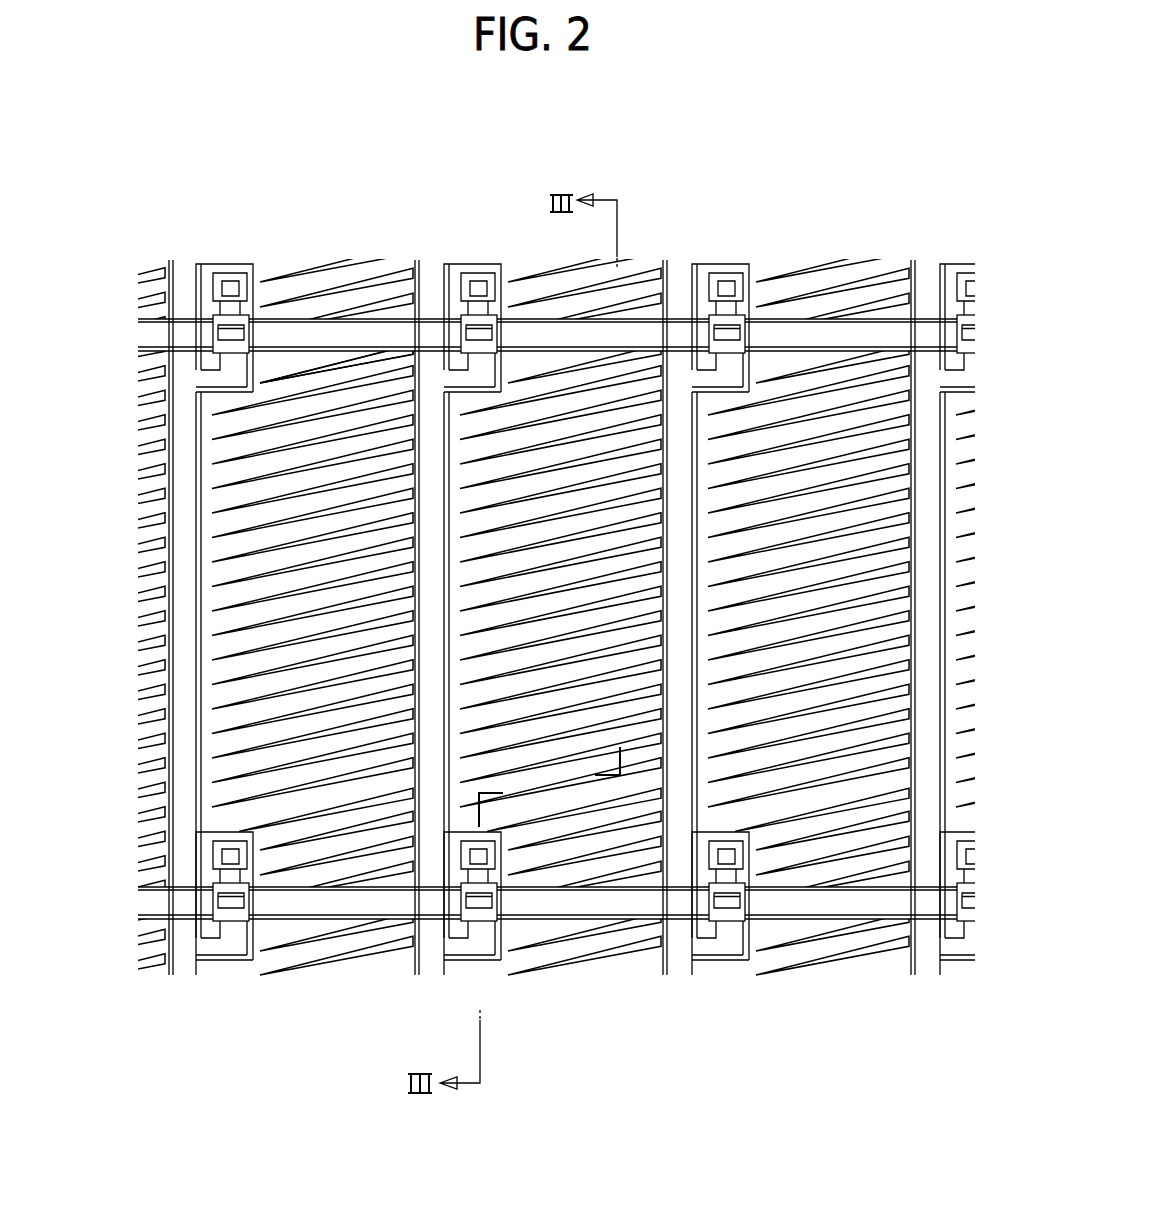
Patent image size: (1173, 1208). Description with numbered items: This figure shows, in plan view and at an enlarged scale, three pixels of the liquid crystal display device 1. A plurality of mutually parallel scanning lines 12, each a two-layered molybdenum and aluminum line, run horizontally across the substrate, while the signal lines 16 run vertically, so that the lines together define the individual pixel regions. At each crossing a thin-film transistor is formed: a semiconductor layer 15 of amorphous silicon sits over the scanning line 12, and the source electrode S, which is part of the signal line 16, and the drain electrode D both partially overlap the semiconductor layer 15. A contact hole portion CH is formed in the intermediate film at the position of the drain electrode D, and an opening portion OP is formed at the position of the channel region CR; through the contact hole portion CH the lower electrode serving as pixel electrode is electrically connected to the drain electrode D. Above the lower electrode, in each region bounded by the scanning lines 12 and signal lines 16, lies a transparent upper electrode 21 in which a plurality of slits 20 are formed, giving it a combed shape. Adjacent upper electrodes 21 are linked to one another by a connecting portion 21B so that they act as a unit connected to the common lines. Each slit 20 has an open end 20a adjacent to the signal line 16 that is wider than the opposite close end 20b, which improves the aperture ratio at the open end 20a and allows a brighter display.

The liquid crystal display device 1 is at (439, 126).
The scanning line 12 is at (556, 618).
The signal line 16 is at (536, 660).
The slit 20 is at (578, 617).
The open end 20a is at (578, 617).
The close end 20b is at (324, 295).
The upper electrode 21 is at (542, 591).
The connecting portion 21B is at (596, 583).
The semiconductor layer 15 is at (603, 670).
The contact hole portion CH is at (534, 604).
The drain electrode D is at (544, 649).
The source electrode S is at (582, 707).
The opening portion OP is at (617, 694).
The channel region CR is at (588, 711).